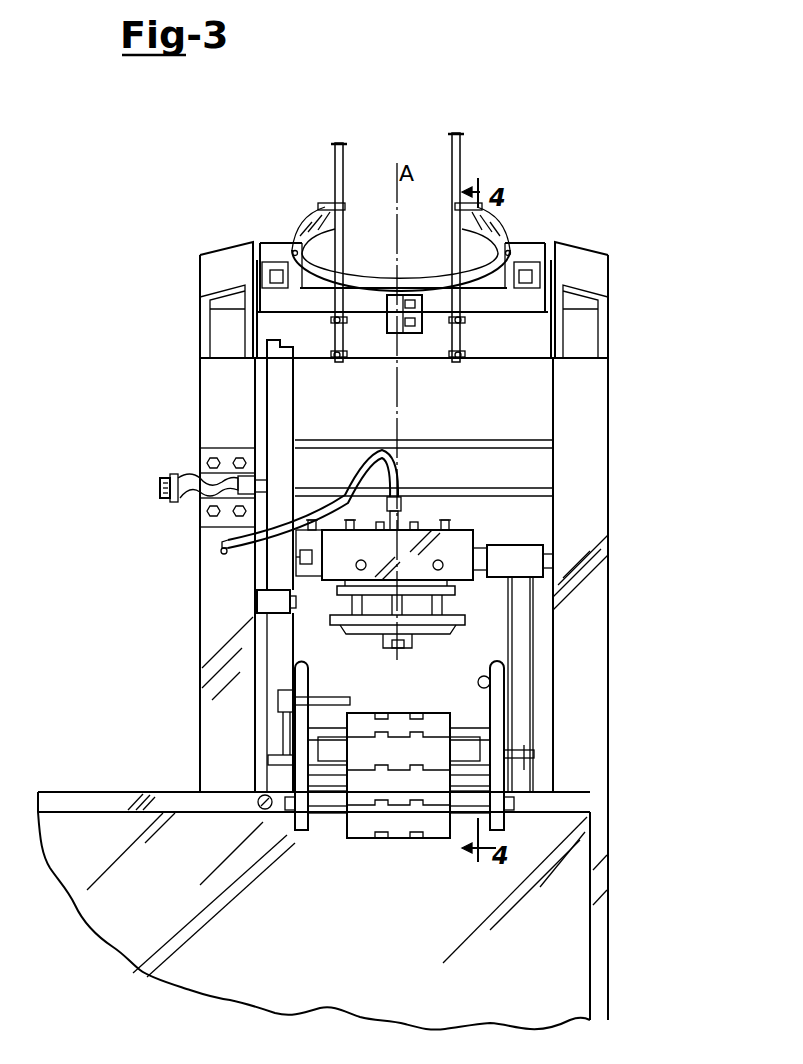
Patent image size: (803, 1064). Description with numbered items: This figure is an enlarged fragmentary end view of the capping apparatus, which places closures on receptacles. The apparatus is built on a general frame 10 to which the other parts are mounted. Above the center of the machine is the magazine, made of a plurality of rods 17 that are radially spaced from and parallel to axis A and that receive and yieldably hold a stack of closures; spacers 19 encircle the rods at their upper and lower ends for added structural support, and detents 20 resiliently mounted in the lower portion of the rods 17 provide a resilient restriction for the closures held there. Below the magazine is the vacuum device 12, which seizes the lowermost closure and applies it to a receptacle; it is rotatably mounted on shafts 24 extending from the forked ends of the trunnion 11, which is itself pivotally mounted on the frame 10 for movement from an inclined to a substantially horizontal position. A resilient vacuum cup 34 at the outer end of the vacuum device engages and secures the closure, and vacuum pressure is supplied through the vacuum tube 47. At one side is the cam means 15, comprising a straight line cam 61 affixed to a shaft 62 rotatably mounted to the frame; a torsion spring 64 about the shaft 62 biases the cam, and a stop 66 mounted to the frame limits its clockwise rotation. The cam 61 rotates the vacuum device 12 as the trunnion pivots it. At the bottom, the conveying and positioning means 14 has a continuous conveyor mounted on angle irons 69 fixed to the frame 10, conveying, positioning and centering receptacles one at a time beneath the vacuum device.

The general frame 10 is at (610, 737).
The trunnion 11 is at (502, 548).
The vacuum device 12 is at (464, 530).
The conveying and positioning means 14 is at (392, 712).
The cam means 15 is at (302, 418).
The rods 17 is at (452, 135).
The spacers 19 is at (502, 233).
The detents 20 is at (452, 322).
The shafts 24 is at (470, 578).
The resilient vacuum cup 34 is at (393, 646).
The vacuum tube 47 is at (384, 450).
The straight line cam 61 is at (280, 393).
The shaft 62 is at (172, 493).
The torsion spring 64 is at (188, 478).
The stop 66 is at (257, 598).
The angle irons 69 is at (472, 730).